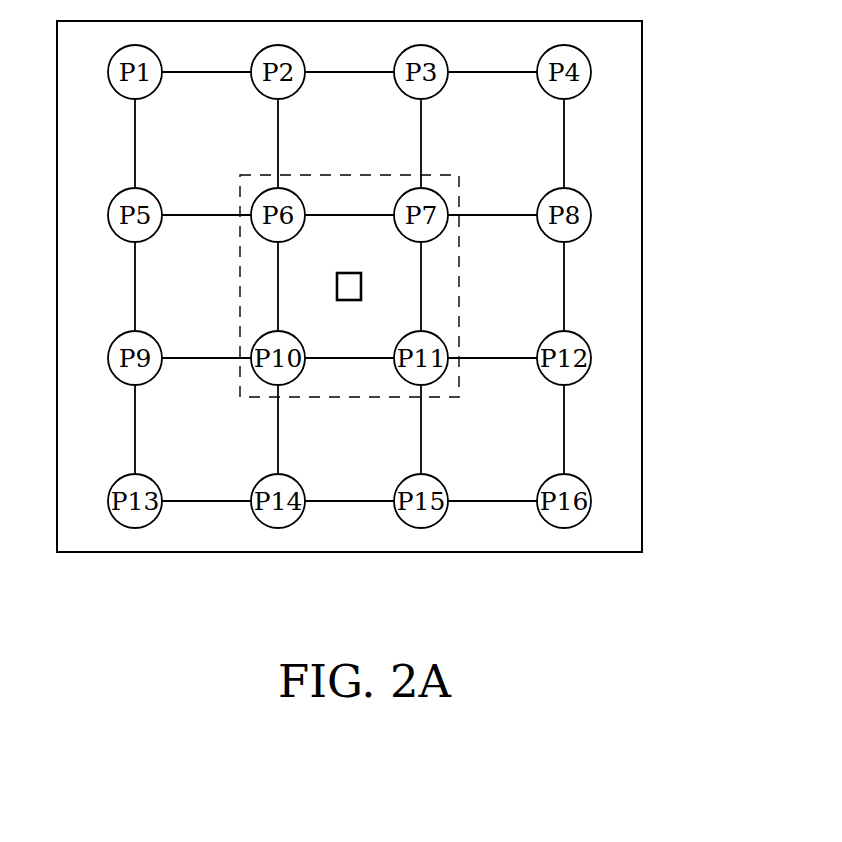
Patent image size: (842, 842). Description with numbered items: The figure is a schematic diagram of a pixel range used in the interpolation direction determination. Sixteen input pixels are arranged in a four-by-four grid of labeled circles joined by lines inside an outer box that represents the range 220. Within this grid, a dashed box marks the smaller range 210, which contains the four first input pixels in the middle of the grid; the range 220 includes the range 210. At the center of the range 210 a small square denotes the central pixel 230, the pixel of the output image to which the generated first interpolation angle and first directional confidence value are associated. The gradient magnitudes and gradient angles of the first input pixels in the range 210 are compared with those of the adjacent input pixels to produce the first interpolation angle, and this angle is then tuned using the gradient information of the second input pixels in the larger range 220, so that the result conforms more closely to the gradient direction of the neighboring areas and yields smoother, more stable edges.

The range 210 is at (457, 175).
The range 220 is at (642, 367).
The central pixel 230 is at (362, 288).